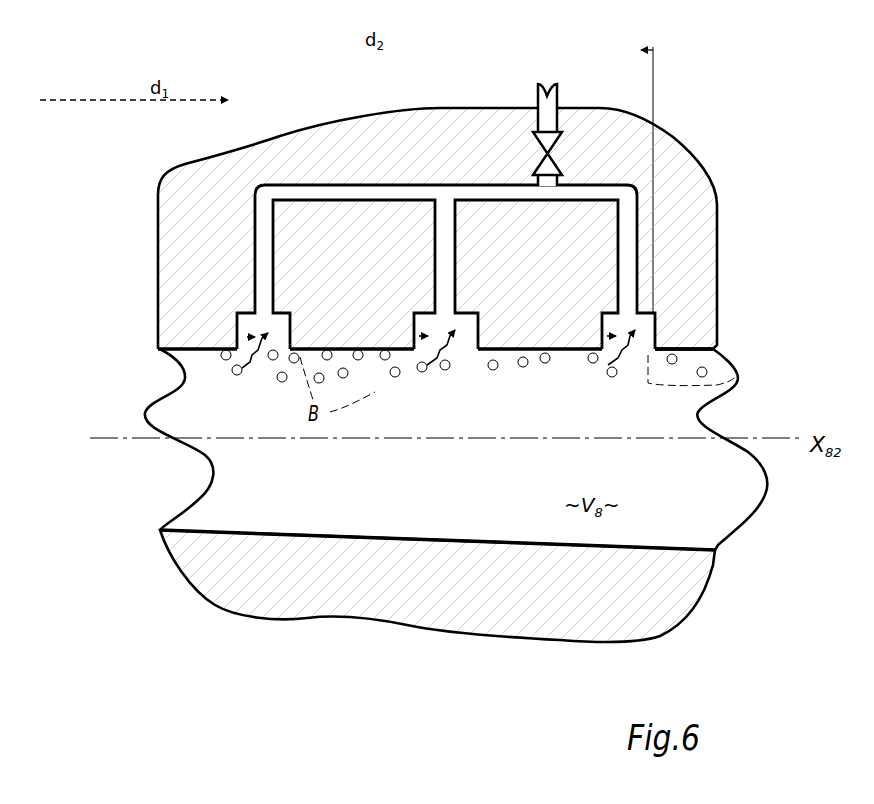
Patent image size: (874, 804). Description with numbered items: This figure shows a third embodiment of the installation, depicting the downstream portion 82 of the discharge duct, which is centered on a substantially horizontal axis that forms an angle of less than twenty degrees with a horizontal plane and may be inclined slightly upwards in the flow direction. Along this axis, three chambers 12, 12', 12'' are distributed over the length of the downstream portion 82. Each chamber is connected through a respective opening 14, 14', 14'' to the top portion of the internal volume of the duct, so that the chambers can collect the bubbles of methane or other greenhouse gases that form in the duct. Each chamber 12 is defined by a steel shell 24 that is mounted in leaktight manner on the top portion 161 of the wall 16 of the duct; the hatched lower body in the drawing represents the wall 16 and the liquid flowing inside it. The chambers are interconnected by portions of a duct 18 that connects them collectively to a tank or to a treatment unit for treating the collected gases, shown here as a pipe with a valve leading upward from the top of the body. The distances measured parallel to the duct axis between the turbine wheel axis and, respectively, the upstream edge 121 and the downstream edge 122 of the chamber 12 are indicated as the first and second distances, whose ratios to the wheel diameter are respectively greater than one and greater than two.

The chamber 12 is at (382, 228).
The chamber 12' is at (352, 221).
The chamber 12'' is at (638, 268).
The opening 14 is at (208, 408).
The opening 14' is at (388, 408).
The opening 14'' is at (571, 408).
The wall 16 is at (232, 533).
The duct 18 is at (262, 255).
The steel shell 24 is at (250, 308).
The downstream portion 82 is at (707, 510).
The upstream edge 121 is at (232, 354).
The downstream edge 122 is at (738, 389).
The top portion 161 is at (727, 353).